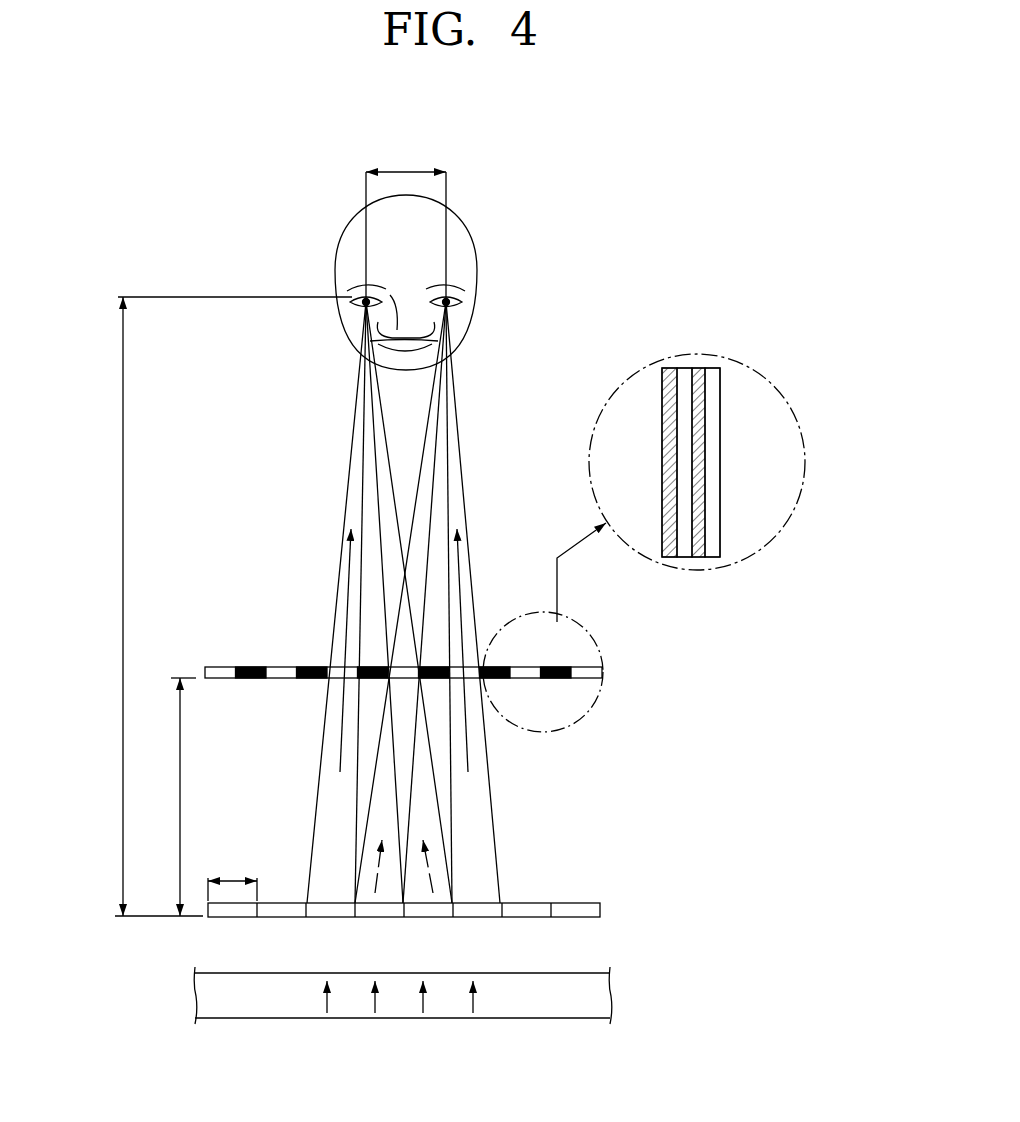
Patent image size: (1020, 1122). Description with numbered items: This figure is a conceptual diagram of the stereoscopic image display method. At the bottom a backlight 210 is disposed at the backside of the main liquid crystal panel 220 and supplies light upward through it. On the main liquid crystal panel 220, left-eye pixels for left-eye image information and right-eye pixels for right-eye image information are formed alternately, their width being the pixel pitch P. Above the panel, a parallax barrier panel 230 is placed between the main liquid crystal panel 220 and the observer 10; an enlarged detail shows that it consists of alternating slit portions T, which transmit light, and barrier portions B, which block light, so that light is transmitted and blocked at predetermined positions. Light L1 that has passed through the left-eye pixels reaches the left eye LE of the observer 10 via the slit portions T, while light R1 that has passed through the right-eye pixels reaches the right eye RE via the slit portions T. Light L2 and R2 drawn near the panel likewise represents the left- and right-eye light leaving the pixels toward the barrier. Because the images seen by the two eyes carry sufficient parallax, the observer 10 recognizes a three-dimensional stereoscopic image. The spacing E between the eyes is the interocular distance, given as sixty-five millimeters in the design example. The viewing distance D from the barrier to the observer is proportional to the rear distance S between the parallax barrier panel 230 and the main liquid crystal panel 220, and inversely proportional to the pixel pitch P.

The observer 10 is at (511, 262).
The backlight 210 is at (600, 997).
The main liquid crystal panel 220 is at (600, 910).
The parallax barrier panel 230 is at (602, 672).
The barrier portion B is at (705, 448).
The slit portion T is at (715, 502).
The right eye RE is at (366, 283).
The left eye LE is at (446, 283).
The light passed through the right-eye pixels R1 is at (346, 597).
The light passed through the left-eye pixels L1 is at (462, 597).
The right-eye image light R2 is at (433, 873).
The left-eye image light L2 is at (375, 873).
The eye distance E is at (406, 223).
The viewing distance D is at (228, 606).
The rear distance S is at (177, 797).
The pitch P is at (232, 877).